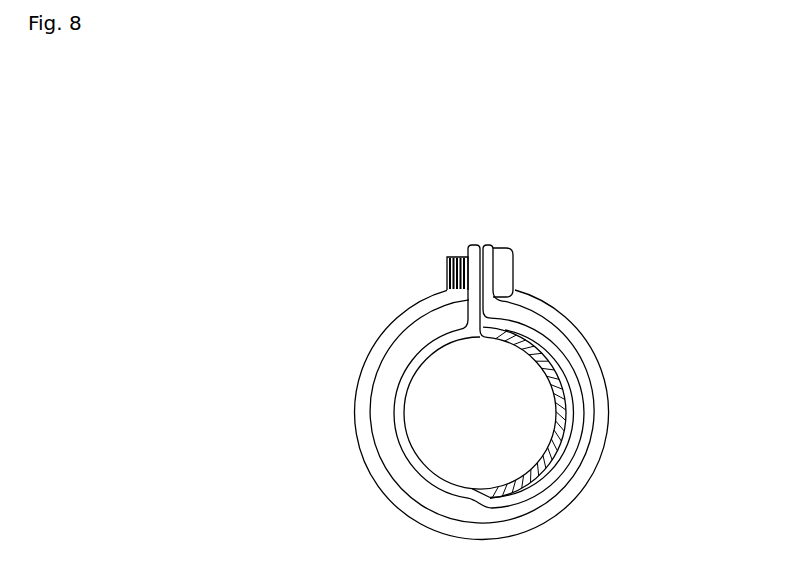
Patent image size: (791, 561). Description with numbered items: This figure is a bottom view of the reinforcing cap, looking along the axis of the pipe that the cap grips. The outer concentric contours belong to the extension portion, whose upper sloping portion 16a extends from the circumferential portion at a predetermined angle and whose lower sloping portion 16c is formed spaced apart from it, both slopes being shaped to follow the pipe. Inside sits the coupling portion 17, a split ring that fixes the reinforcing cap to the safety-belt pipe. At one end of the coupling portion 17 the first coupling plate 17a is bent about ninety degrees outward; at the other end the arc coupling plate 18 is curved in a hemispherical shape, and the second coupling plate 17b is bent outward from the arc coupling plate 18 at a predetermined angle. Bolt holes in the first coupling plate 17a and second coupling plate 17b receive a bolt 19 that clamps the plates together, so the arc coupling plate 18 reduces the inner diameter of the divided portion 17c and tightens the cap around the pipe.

The upper sloping portion 16a is at (366, 445).
The lower sloping portion 16c is at (390, 370).
The coupling portion 17 is at (413, 460).
The first coupling plate 17a is at (477, 245).
The second coupling plate 17b is at (490, 247).
The divided portion 17c is at (557, 440).
The arc coupling plate 18 is at (575, 401).
The bolt 19 is at (508, 272).